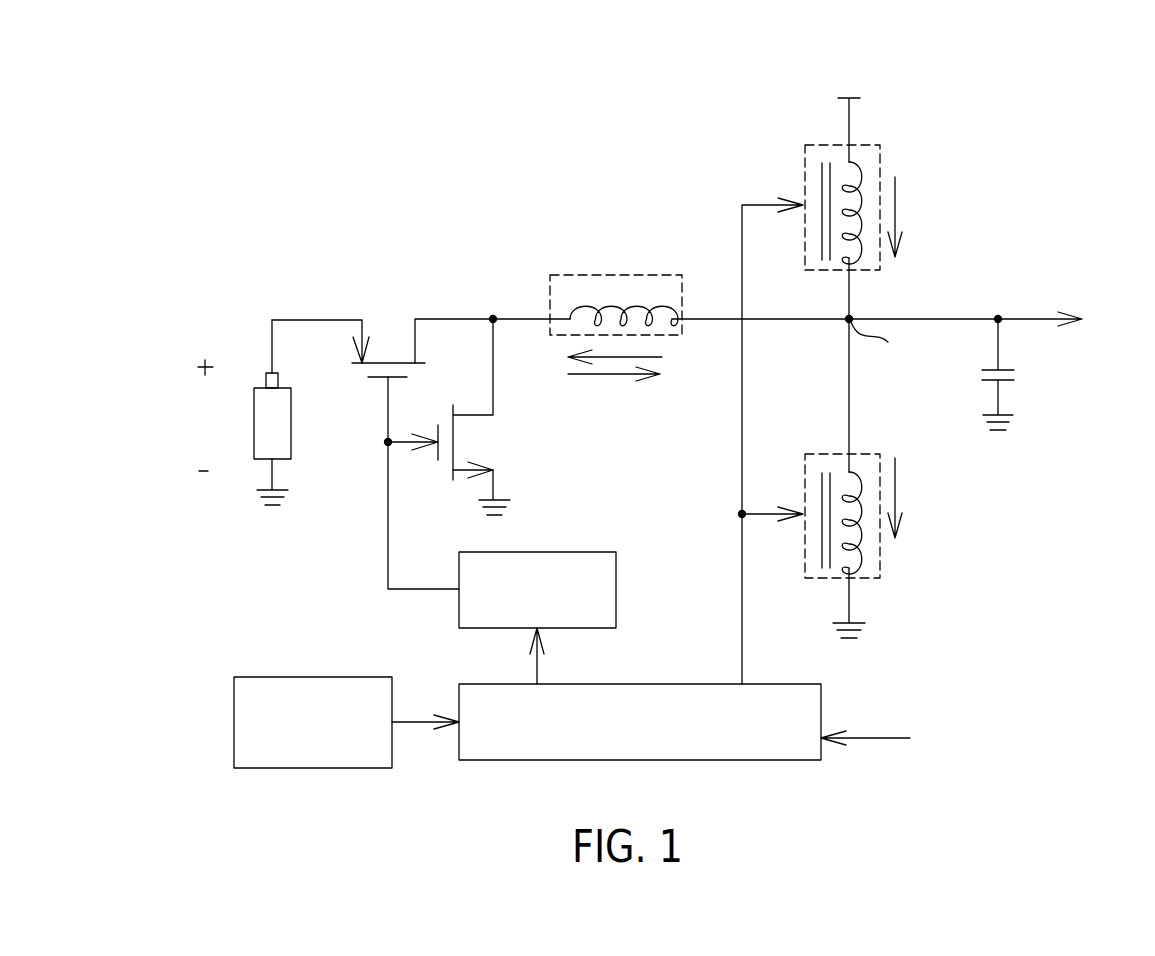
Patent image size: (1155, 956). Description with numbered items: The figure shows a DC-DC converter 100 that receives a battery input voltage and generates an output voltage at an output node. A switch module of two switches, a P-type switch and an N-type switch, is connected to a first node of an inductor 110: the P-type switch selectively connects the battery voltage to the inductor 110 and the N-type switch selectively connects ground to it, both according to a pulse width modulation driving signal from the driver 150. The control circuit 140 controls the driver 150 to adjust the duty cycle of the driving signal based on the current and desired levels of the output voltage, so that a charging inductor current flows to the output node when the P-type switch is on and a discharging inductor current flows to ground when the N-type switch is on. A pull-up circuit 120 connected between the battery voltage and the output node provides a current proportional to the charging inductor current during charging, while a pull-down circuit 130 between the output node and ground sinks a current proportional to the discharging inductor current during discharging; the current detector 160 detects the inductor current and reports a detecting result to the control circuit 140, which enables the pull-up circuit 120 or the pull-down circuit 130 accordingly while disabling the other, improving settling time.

The DC-DC converter 100 is at (278, 126).
The inductor 110 is at (617, 275).
The pull-up circuit 120 is at (880, 148).
The pull-down circuit 130 is at (880, 570).
The control circuit 140 is at (667, 684).
The driver 150 is at (616, 565).
The current detector 160 is at (313, 677).